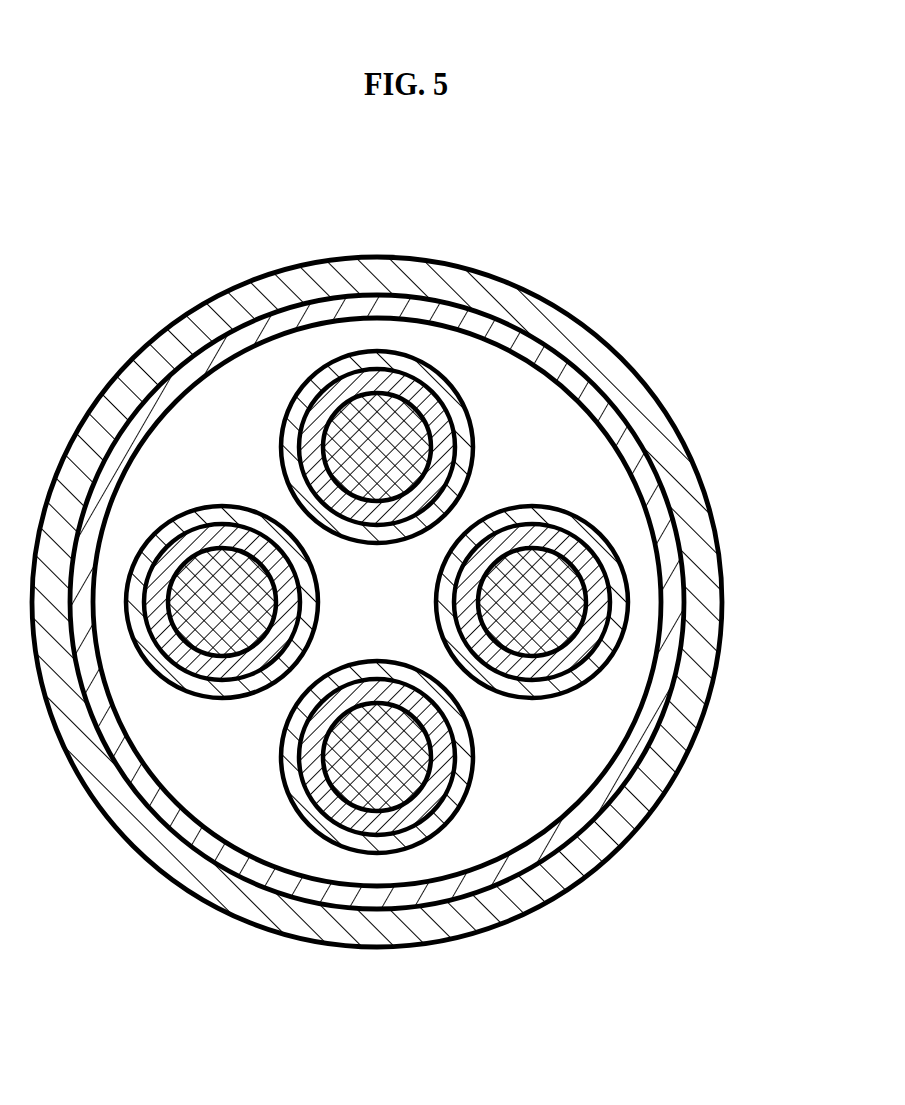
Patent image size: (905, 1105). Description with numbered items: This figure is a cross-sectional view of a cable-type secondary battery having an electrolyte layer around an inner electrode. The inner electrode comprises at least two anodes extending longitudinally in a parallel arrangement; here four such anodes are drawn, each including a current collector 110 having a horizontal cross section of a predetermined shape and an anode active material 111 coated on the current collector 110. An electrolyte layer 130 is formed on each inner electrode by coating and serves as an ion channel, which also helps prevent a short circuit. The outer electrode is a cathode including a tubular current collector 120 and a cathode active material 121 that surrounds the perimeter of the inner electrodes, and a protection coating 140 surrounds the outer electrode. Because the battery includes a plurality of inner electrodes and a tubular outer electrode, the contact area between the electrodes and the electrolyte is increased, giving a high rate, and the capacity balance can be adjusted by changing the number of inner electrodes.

The current collector 110 is at (368, 403).
The anode active material 111 is at (398, 375).
The electrolyte layer 130 is at (438, 387).
The protection coating 140 is at (610, 372).
The tubular current collector 120 is at (630, 437).
The cathode active material 121 is at (640, 527).